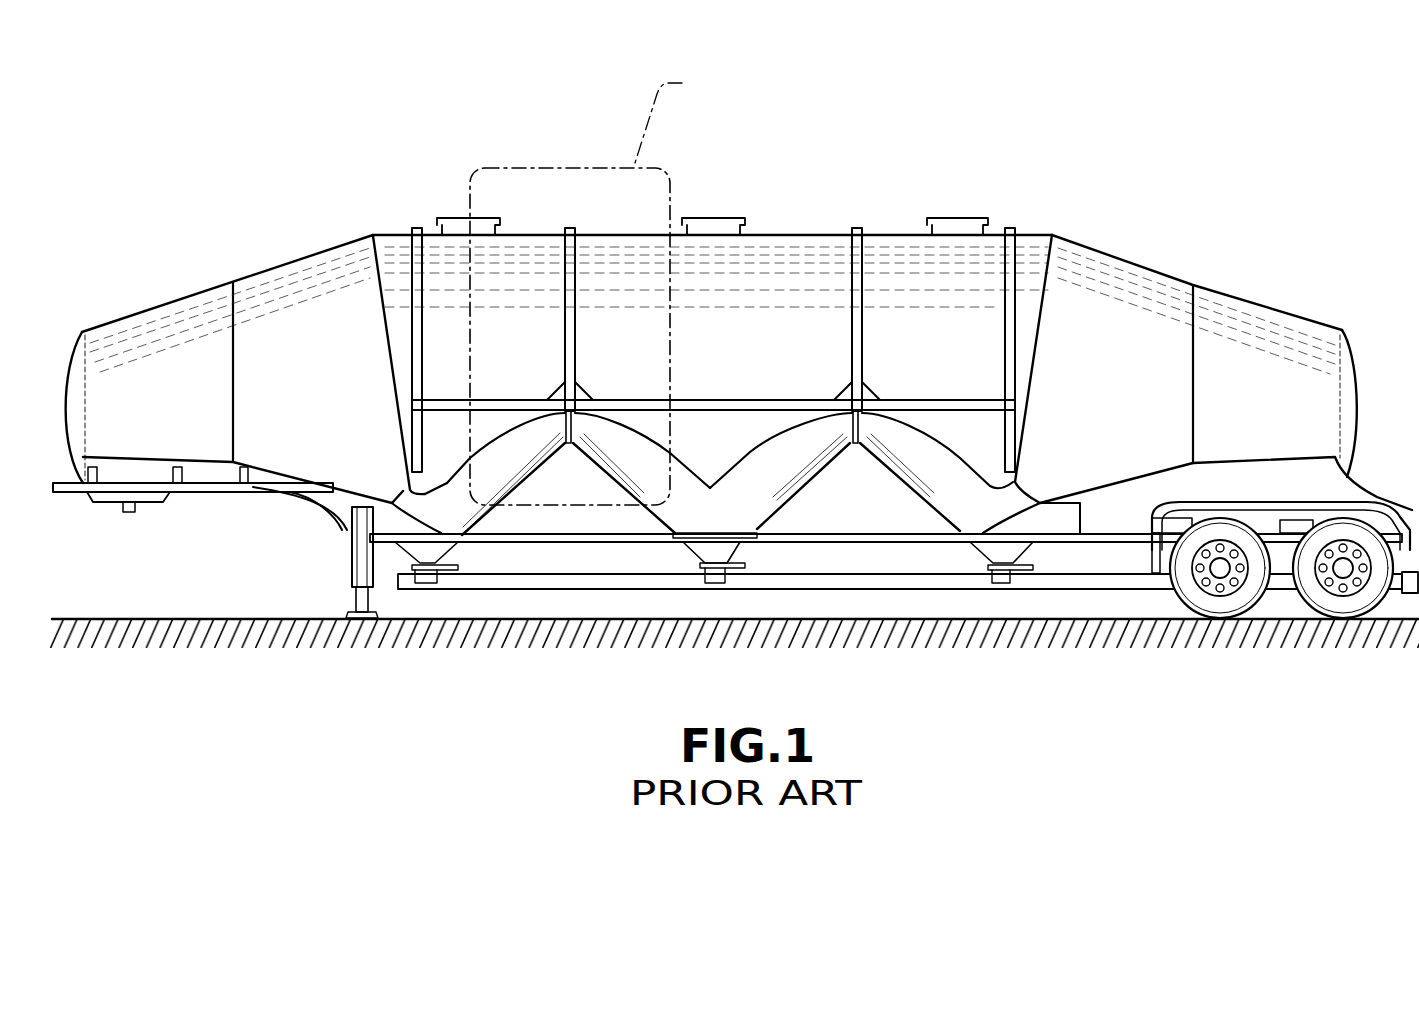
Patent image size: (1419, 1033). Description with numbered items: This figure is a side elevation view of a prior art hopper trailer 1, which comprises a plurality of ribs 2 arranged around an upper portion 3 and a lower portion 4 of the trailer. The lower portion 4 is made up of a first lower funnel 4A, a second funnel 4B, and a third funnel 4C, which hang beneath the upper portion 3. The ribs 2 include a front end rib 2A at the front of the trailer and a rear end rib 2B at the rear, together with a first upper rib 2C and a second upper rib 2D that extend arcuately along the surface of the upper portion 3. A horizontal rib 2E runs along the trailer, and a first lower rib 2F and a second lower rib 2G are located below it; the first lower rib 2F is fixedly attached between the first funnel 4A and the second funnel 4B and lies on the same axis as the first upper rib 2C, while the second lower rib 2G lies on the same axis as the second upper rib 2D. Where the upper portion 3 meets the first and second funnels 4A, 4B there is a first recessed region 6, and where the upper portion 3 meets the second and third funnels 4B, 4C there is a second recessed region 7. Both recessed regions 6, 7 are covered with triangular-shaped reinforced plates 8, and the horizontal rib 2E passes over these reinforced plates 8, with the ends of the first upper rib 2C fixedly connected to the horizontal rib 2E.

The hopper trailer 1 is at (1082, 174).
The ribs 2 is at (739, 326).
The front end rib 2A is at (417, 230).
The rear end rib 2B is at (1011, 230).
The first upper rib 2C is at (570, 230).
The second upper rib 2D is at (858, 230).
The horizontal rib 2E is at (757, 400).
The first lower rib 2F is at (570, 344).
The second lower rib 2G is at (854, 508).
The upper portion 3 is at (739, 326).
The lower portion 4 is at (716, 567).
The first lower funnel 4A is at (516, 500).
The second funnel 4B is at (624, 500).
The third funnel 4C is at (917, 497).
The first recessed region 6 is at (543, 424).
The second recessed region 7 is at (831, 424).
The reinforced plates 8 is at (578, 398).